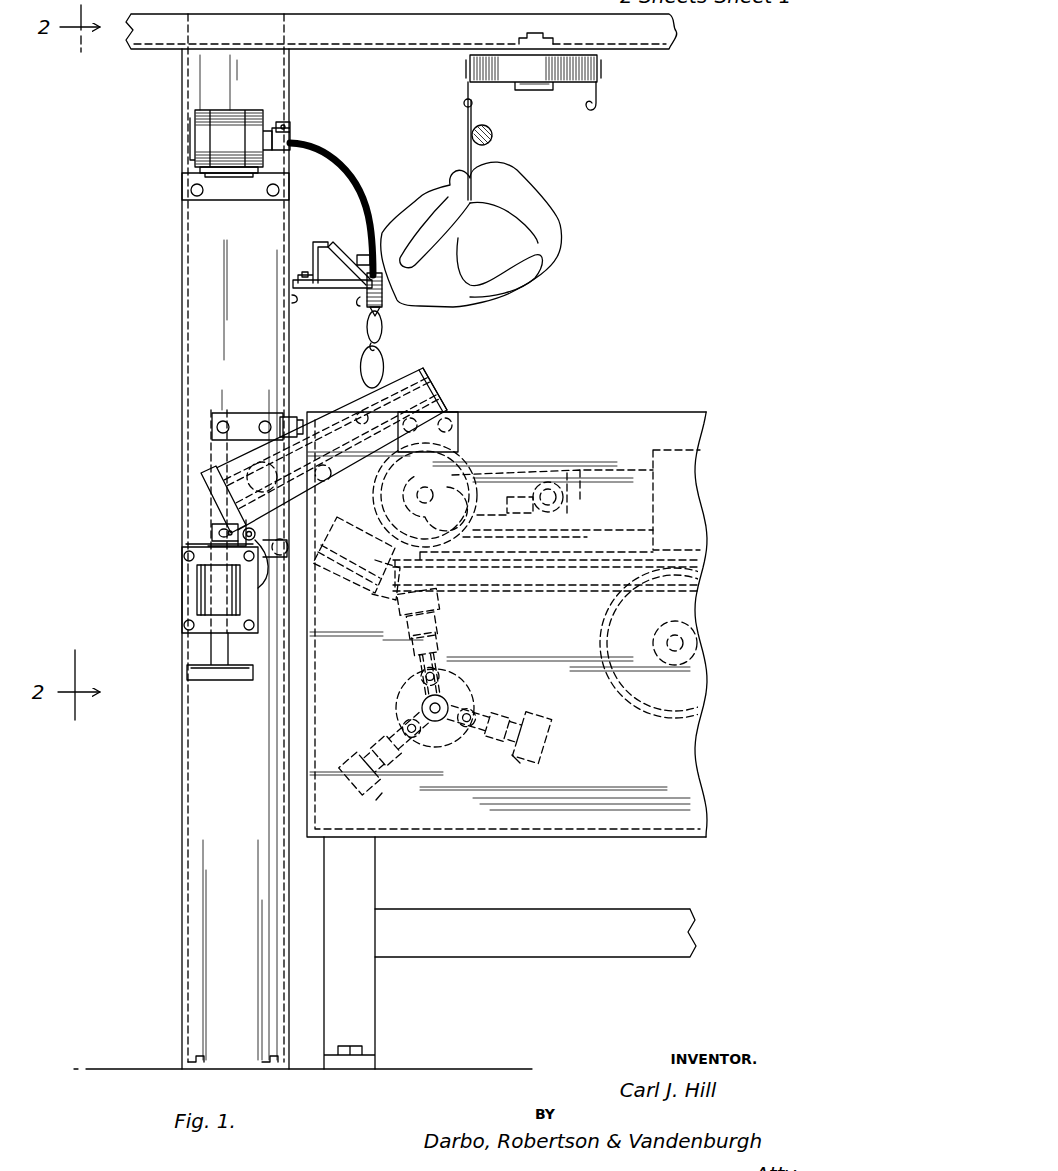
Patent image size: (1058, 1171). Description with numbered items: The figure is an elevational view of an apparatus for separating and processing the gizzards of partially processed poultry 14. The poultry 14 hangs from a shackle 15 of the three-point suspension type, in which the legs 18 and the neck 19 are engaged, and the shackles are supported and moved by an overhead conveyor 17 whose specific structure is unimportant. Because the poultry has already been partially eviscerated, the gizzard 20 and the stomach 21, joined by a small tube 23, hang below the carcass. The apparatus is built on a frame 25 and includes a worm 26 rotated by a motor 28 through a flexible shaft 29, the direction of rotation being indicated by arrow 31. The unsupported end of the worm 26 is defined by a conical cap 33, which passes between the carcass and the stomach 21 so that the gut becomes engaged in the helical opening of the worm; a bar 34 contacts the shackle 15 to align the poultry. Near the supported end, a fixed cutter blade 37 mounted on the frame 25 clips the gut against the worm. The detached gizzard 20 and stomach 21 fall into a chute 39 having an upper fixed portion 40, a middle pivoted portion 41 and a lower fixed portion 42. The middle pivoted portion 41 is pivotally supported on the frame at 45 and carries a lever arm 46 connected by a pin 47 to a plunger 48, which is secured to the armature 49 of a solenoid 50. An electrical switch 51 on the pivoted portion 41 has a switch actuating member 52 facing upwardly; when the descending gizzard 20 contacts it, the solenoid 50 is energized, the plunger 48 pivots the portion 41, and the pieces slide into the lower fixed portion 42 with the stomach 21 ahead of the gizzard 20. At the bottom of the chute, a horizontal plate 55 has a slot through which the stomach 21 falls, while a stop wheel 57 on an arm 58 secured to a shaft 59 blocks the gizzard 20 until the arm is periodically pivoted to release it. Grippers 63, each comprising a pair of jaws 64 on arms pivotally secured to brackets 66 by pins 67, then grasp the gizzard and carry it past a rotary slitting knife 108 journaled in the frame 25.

The partially processed poultry 14 is at (562, 242).
The shackle 15 is at (465, 118).
The overhead conveyor 17 is at (566, 90).
The legs 18 is at (433, 203).
The neck 19 is at (517, 193).
The gizzard 20 is at (361, 379).
The stomach 21 is at (383, 337).
The small tube 23 is at (367, 345).
The frame 25 is at (180, 358).
The worm 26 is at (365, 293).
The motor 28 is at (197, 118).
The flexible shaft 29 is at (334, 162).
The arrow indicating direction of worm rotation 31 is at (357, 302).
The conical cap 33 is at (381, 309).
The bar 34 is at (490, 129).
The fixed cutter blade 37 is at (357, 240).
The chute 39 is at (440, 386).
The upper fixed portion 40 is at (424, 369).
The middle pivoted portion 41 is at (308, 500).
The lower fixed portion 42 is at (363, 594).
The pivot 45 is at (271, 566).
The lever arm 46 is at (220, 518).
The pin 47 is at (213, 534).
The plunger 48 is at (220, 543).
The armature 49 is at (198, 672).
The solenoid 50 is at (203, 599).
The electrical switch 51 is at (208, 479).
The switch actuating member 52 is at (228, 472).
The horizontal plate 55 is at (463, 603).
The wheel 57 is at (457, 450).
The arm 58 is at (512, 480).
The shaft 59 is at (553, 484).
The grippers 63 is at (512, 757).
The jaws 64 is at (407, 648).
The brackets 66 is at (484, 708).
The pins 67 is at (450, 640).
The rotary slitting knife 108 is at (683, 688).